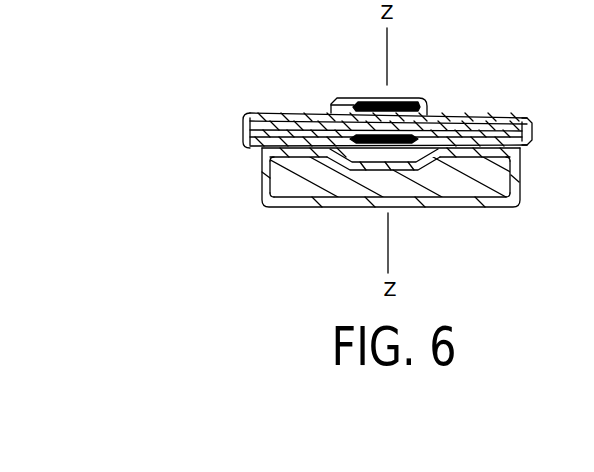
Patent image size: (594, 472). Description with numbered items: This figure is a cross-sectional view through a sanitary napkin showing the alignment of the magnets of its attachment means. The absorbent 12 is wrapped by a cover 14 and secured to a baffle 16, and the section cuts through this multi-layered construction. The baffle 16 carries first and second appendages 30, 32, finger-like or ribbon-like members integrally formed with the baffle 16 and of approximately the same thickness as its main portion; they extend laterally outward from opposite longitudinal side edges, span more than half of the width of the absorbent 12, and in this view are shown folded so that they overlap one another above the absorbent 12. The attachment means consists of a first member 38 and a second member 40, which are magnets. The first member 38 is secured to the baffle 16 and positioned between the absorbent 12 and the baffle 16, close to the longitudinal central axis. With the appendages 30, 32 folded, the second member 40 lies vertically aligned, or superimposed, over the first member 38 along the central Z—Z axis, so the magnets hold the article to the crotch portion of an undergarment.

The absorbent 12 is at (485, 178).
The cover 14 is at (438, 197).
The baffle 16 is at (483, 178).
The first appendage 30 is at (480, 117).
The second appendage 32 is at (302, 112).
The first member 38 is at (383, 185).
The second member 40 is at (408, 100).